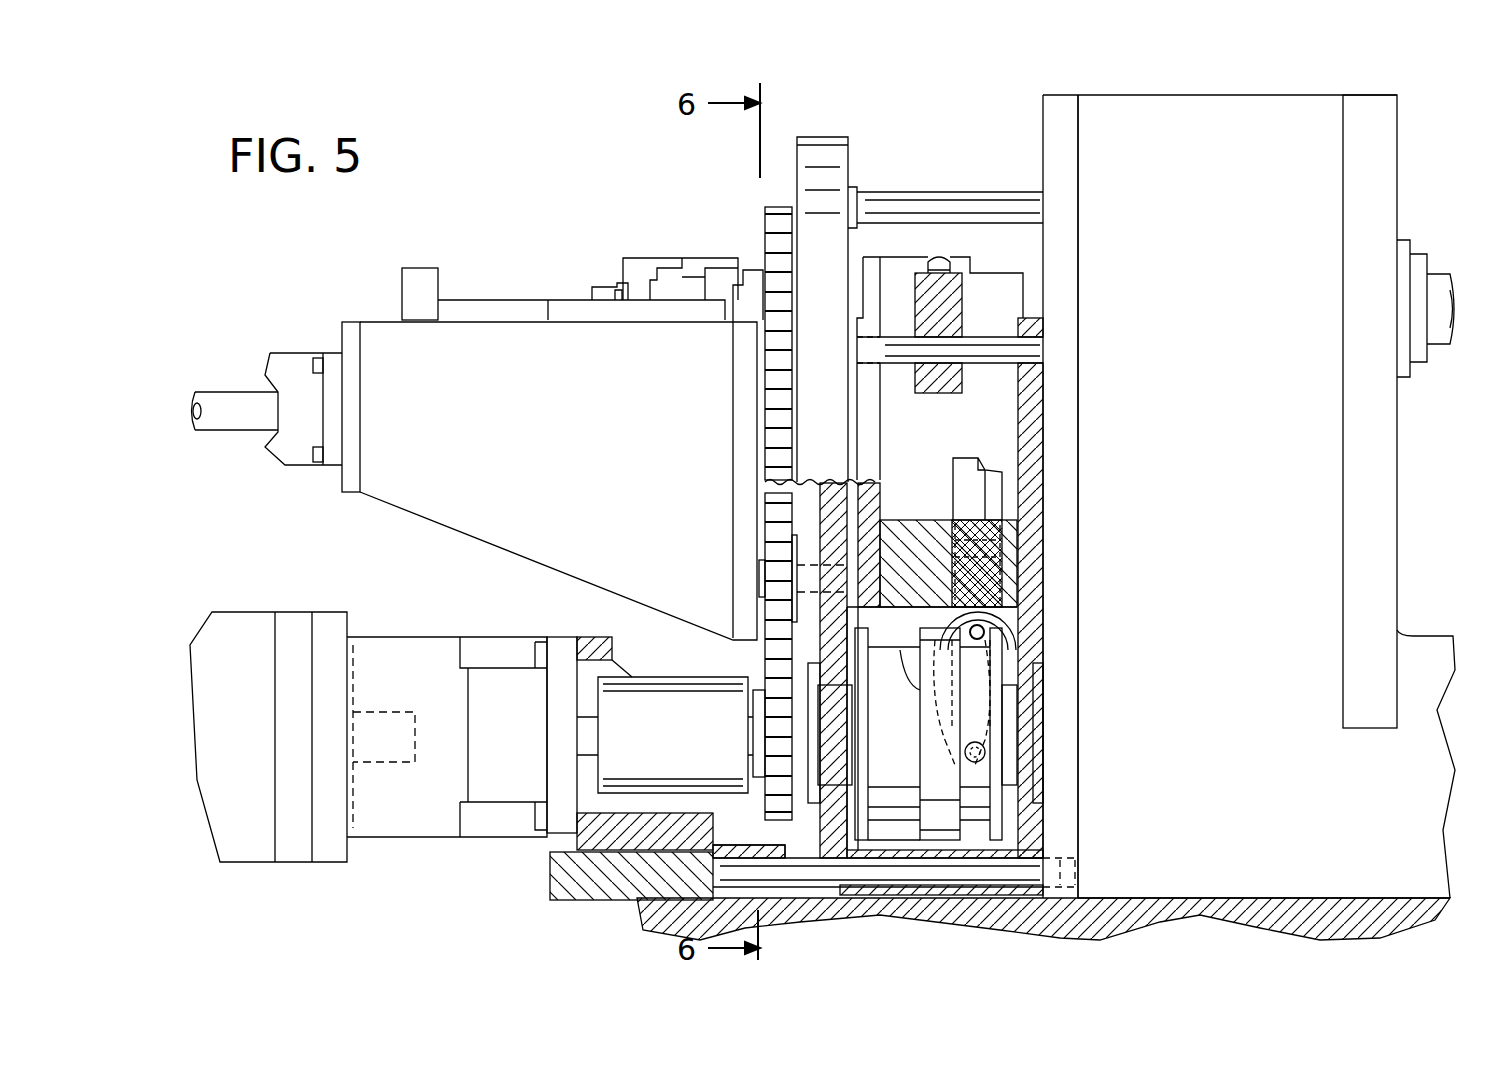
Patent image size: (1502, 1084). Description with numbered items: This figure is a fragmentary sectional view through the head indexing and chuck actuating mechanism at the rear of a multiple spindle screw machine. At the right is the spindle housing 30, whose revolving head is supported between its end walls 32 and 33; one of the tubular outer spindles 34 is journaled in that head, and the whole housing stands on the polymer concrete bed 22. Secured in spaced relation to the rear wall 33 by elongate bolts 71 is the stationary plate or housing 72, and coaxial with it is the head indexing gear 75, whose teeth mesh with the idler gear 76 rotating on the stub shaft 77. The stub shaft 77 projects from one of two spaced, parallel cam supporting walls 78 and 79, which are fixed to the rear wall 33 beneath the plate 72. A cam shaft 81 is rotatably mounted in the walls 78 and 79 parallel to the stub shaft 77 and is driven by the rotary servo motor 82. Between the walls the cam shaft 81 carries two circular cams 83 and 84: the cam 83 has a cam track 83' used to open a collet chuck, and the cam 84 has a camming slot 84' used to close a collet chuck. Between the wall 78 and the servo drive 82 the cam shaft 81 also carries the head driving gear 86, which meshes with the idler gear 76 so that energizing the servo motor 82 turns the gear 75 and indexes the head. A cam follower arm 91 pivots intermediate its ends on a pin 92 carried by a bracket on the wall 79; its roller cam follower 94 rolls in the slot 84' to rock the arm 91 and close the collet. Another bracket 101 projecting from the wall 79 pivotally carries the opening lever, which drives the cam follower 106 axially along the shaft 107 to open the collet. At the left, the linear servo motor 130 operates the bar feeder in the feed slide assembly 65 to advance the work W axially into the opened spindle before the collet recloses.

The work W is at (232, 392).
The linear servo motor 130 is at (296, 353).
The feed slide assembly 65 is at (628, 244).
The head indexing gear 75 is at (768, 225).
The stationary plate or housing 72 is at (835, 152).
The elongate bolts 71 is at (903, 200).
The rear wall 33 is at (1048, 165).
The spindle housing 30 is at (1067, 510).
The polymer concrete bed 22 is at (1398, 843).
The end wall 32 is at (1390, 477).
The outer spindle 34 is at (1436, 272).
The cam follower 106 is at (965, 298).
The shaft 107 is at (995, 333).
The cam supporting wall 79 is at (1040, 832).
The cam follower arm 91 is at (975, 458).
The bracket 101 is at (918, 520).
The stub shaft 77 is at (762, 578).
The idler gear 76 is at (765, 640).
The head driving gear 86 is at (768, 803).
The cam shaft 81 is at (585, 742).
The rotary servo motor 82 is at (235, 598).
The cam supporting wall 78 is at (820, 830).
The circular cam 83 is at (887, 796).
The cam track or groove 83' is at (937, 796).
The circular cam 84 is at (999, 796).
The camming slot or groove 84' is at (1069, 814).
The pin 92 is at (985, 630).
The roller cam follower 94 is at (985, 747).